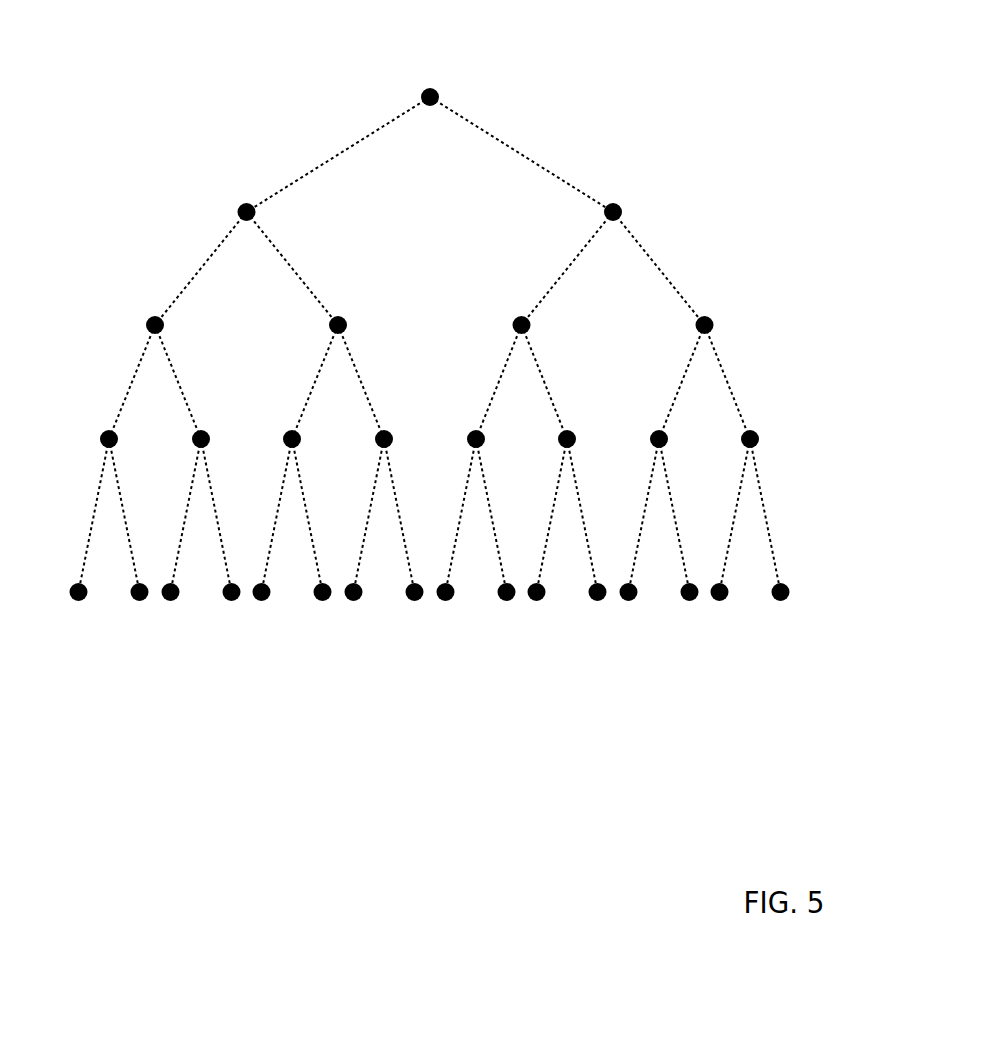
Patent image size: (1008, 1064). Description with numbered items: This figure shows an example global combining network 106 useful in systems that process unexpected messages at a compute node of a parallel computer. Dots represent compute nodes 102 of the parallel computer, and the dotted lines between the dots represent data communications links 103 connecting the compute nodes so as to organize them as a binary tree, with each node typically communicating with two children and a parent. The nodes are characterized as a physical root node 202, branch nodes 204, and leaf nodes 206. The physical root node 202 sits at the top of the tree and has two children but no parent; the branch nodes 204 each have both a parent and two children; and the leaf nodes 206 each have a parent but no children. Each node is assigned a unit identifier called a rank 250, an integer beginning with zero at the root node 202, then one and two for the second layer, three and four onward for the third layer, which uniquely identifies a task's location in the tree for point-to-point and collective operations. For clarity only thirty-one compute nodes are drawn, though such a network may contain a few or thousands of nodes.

The global combining network 106 is at (212, 694).
The data communications links 103 is at (347, 147).
The physical root node 202 is at (447, 87).
The branch nodes 204 is at (803, 160).
The leaf nodes 206 is at (506, 600).
The compute nodes 102 is at (492, 428).
The rank 250 is at (577, 222).